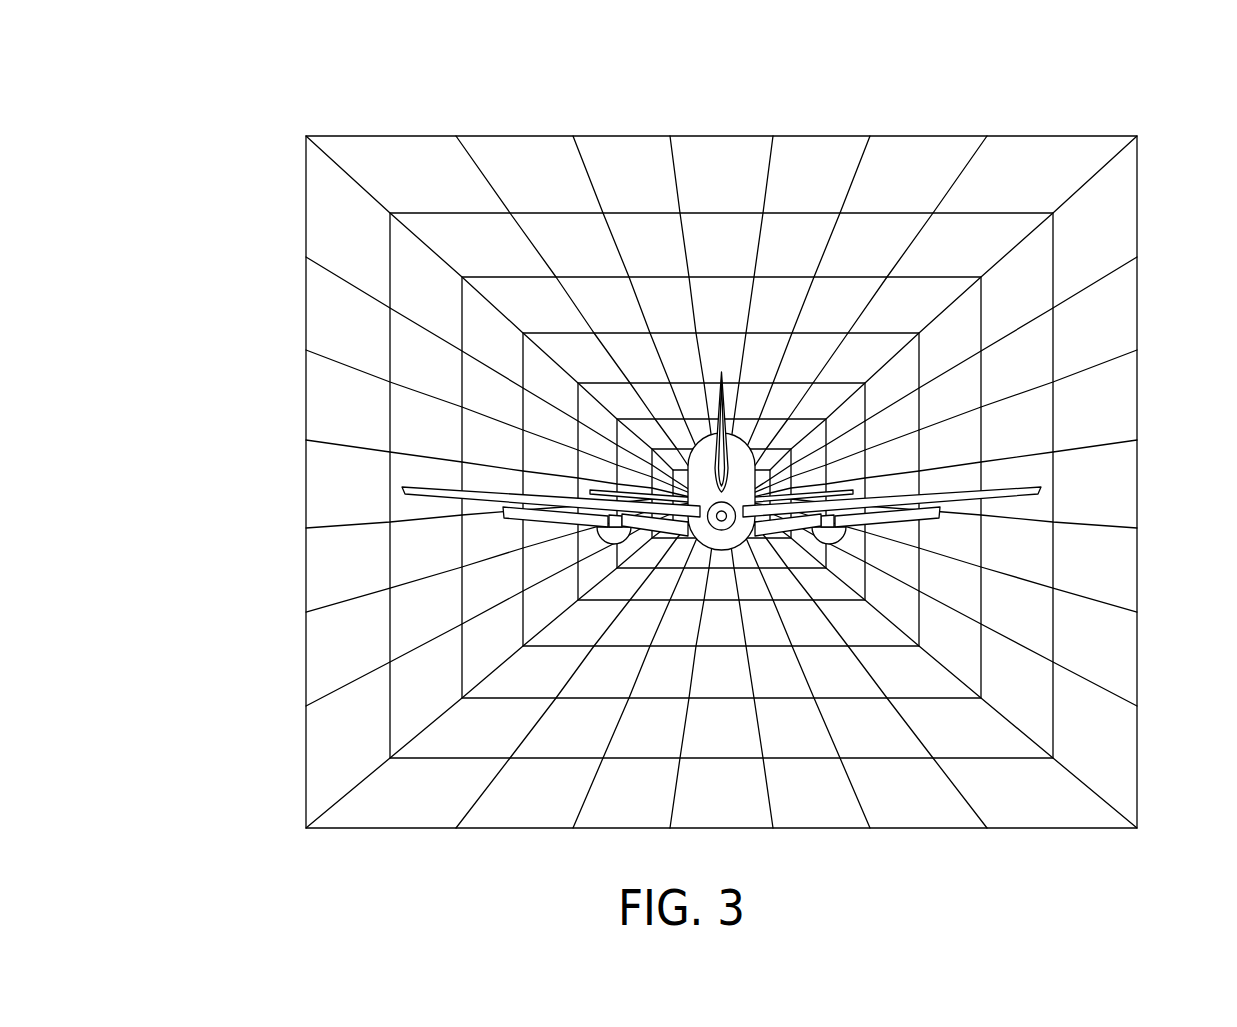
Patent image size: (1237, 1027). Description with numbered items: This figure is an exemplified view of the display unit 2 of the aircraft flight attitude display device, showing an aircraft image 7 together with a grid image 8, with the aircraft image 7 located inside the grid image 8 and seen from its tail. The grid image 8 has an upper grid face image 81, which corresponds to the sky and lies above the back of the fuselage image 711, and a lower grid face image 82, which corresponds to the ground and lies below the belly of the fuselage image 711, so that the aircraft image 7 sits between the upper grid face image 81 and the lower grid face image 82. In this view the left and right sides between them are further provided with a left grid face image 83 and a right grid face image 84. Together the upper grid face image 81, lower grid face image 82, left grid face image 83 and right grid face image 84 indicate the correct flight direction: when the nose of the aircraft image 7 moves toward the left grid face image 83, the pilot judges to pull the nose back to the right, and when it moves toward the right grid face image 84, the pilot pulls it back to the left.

The display unit 2 is at (925, 137).
The aircraft image 7 is at (716, 296).
The fuselage image 711 is at (737, 458).
The grid image 8 is at (700, 458).
The upper grid face image 81 is at (665, 295).
The lower grid face image 82 is at (790, 739).
The left grid face image 83 is at (417, 425).
The right grid face image 84 is at (1033, 425).